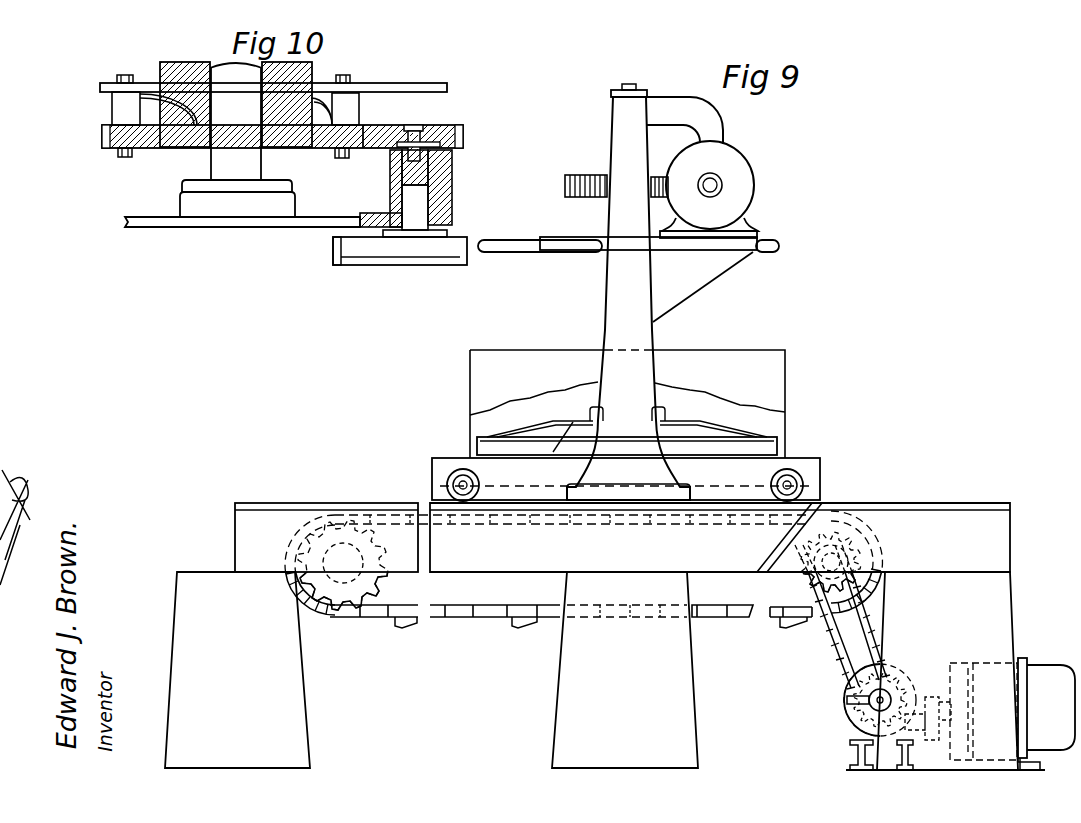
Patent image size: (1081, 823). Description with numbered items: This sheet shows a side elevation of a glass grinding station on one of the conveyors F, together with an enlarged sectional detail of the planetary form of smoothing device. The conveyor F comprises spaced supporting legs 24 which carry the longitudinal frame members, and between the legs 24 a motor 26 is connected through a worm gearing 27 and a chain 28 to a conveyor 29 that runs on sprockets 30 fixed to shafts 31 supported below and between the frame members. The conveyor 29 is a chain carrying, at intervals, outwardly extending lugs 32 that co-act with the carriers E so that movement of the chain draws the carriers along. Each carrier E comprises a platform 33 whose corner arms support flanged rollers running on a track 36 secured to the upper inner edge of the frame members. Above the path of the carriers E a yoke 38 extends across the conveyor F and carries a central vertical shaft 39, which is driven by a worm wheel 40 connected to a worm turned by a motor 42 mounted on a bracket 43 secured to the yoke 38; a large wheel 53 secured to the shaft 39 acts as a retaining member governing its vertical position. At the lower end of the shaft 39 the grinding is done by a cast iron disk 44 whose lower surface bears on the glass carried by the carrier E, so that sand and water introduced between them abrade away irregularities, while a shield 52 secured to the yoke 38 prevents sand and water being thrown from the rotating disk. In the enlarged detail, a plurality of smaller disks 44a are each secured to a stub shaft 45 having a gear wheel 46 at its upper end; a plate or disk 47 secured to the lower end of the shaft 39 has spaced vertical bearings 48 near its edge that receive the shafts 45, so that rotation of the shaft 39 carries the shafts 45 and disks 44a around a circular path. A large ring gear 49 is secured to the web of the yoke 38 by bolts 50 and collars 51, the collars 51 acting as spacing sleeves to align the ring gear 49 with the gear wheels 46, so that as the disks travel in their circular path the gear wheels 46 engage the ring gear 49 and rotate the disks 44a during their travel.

In FIG. 9, the supporting legs 24 is at (591, 671).
In FIG. 9, the motor 26 is at (990, 714).
In FIG. 9, the worm gearing 27 is at (856, 726).
In FIG. 9, the chain 28 is at (836, 659).
In FIG. 9, the conveyor 29 is at (500, 619).
In FIG. 9, the sprockets 30 is at (372, 574).
In FIG. 9, the shafts 31 is at (343, 545).
In FIG. 9, the lugs 32 is at (408, 629).
In FIG. 9, the platform 33 is at (452, 458).
In FIG. 9, the track 36 is at (272, 503).
In FIG. 9, the yoke 38 is at (628, 298).
In FIG. 10, the vertical shaft 39 is at (236, 124).
In FIG. 9, the vertical shaft 39 is at (630, 85).
In FIG. 9, the worm wheel 40 is at (591, 197).
In FIG. 9, the motor 42 is at (702, 167).
In FIG. 9, the bracket 43 is at (648, 279).
In FIG. 9, the grinding disk 44 is at (768, 447).
In FIG. 10, the smaller grinding disks 44a is at (362, 258).
In FIG. 10, the shaft 45 is at (418, 197).
In FIG. 10, the gear wheel 46 is at (442, 127).
In FIG. 10, the plate or disk 47 is at (308, 222).
In FIG. 10, the vertical bearings 48 is at (453, 168).
In FIG. 10, the ring gear 49 is at (103, 146).
In FIG. 10, the bolts 50 is at (356, 180).
In FIG. 10, the collars 51 is at (118, 108).
In FIG. 9, the shield 52 is at (757, 350).
In FIG. 9, the large wheel 53 is at (548, 252).
In FIG. 9, the carriers E is at (531, 478).
In FIG. 9, the conveyors F is at (303, 680).